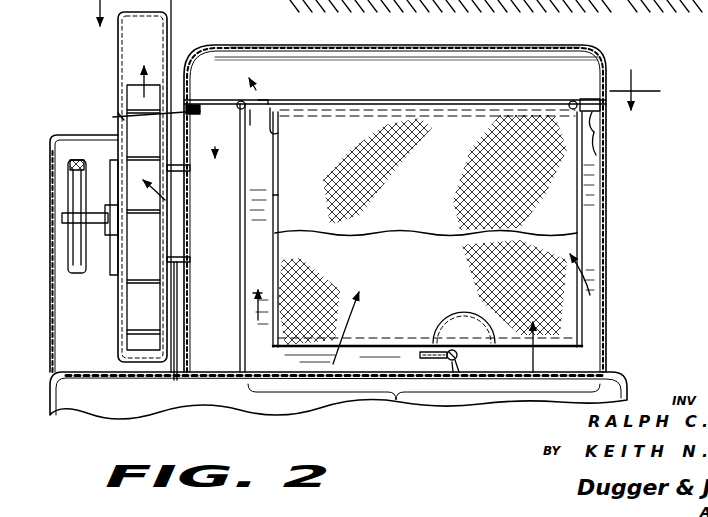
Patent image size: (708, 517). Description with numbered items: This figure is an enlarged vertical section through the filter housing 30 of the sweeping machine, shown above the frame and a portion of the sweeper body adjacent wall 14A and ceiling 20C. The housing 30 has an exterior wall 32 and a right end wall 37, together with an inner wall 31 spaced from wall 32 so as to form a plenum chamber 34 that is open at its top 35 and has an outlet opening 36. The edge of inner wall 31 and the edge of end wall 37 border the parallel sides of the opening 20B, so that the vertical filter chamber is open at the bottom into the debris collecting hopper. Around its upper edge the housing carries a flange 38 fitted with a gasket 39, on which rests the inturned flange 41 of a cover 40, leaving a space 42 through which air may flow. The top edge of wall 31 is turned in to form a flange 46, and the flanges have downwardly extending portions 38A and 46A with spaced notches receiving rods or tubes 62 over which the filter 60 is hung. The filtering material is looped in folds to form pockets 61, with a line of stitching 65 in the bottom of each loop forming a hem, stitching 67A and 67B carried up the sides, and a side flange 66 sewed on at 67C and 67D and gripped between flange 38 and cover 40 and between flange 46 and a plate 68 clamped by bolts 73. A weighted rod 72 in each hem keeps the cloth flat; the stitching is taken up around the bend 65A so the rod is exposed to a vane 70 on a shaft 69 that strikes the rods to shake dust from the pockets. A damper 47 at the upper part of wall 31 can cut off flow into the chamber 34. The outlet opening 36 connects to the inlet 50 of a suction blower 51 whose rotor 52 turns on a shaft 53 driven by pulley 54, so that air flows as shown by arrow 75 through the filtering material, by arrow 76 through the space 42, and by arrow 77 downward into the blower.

The wall 14A is at (668, 3).
The opening 20B is at (395, 399).
The ceiling 20C is at (612, 0).
The housing 30 is at (616, 228).
The inner wall 31 is at (242, 343).
The exterior wall 32 is at (190, 325).
The plenum chamber 34 is at (224, 275).
The open top 35 is at (212, 107).
The outlet opening 36 is at (190, 250).
The right end wall 37 is at (601, 268).
The flange 38 is at (200, 126).
The downwardly extending portion 38A is at (601, 156).
The gasket 39 is at (652, 110).
The cover 40 is at (460, 46).
The inturned flange 41 is at (193, 101).
The space 42 is at (412, 74).
The flange 46 is at (250, 113).
The downwardly extending portion 46A is at (279, 133).
The damper 47 is at (265, 101).
The inlet 50 is at (175, 382).
The suction blower 51 is at (113, 93).
The rotor 52 is at (133, 85).
The shaft 53 is at (96, 228).
The pulley 54 is at (62, 160).
The filter 60 is at (434, 198).
The pockets 61 is at (562, 298).
The rods or tubes 62 is at (423, 116).
The line of stitching 65 is at (312, 336).
The bend 65A is at (463, 318).
The side flange 66 is at (240, 98).
The stitching 67A is at (278, 197).
The stitching 67B is at (600, 200).
The stitching 67C is at (393, 93).
The stitching 67D is at (492, 77).
The plate 68 is at (242, 100).
The shaft 69 is at (462, 358).
The vane 70 is at (452, 362).
The rod 72 is at (433, 337).
The bolts 73 is at (262, 100).
The arrow 75 is at (343, 327).
The arrow 76 is at (366, 95).
The arrow 77 is at (186, 216).